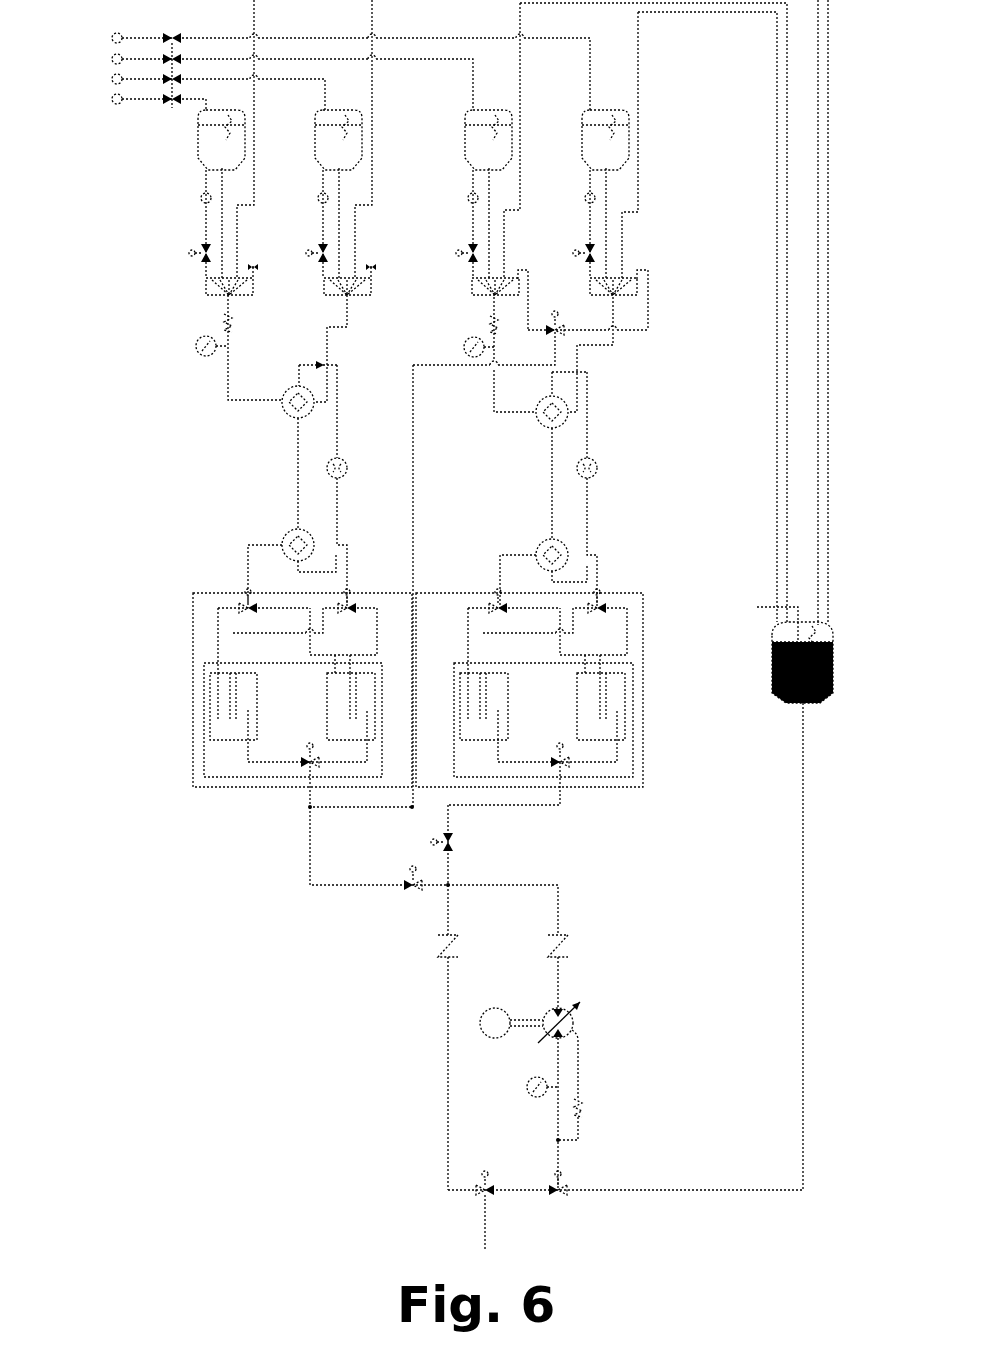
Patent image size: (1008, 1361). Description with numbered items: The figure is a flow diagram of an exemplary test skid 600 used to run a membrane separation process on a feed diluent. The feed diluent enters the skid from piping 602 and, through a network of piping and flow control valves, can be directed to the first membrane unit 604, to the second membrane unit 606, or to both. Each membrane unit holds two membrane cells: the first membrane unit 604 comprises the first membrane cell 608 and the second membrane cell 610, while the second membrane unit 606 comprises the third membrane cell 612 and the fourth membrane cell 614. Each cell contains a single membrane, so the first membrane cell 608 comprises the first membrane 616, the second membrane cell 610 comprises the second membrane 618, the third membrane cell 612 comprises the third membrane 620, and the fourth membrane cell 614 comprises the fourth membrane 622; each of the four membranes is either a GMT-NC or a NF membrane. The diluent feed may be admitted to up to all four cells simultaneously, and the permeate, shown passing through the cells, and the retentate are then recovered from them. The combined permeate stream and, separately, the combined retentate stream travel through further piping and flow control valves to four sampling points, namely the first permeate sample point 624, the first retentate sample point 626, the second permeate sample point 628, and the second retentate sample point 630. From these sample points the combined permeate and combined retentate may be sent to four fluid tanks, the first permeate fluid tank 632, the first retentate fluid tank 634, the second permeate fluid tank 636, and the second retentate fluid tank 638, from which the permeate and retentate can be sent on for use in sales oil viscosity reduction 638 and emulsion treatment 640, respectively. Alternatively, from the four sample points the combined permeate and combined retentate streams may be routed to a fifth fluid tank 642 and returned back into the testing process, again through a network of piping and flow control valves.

The test skid 600 is at (112, 246).
The piping 602 is at (482, 1208).
The membrane unit 1 604 is at (211, 748).
The membrane unit 2 606 is at (635, 757).
The membrane cell 1 608 is at (211, 685).
The membrane cell 2 610 is at (372, 695).
The membrane cell 3 612 is at (460, 680).
The membrane cell 4 614 is at (620, 682).
The membrane 1 616 is at (222, 712).
The membrane 2 618 is at (240, 692).
The membrane 3 620 is at (472, 712).
The membrane 4 622 is at (577, 688).
The permeate sample point 1 624 is at (206, 285).
The retentate sample point 1 626 is at (324, 288).
The permeate sample point 2 628 is at (472, 285).
The retentate sample point 2 630 is at (640, 282).
The permeate fluid tank 1 632 is at (197, 133).
The retentate fluid tank 1 634 is at (316, 136).
The permeate fluid tank 2 636 is at (466, 133).
The retentate fluid tank 2 638 is at (111, 59).
The emulsion treatment 640 is at (111, 37).
The 5th fluid tank 642 is at (835, 655).